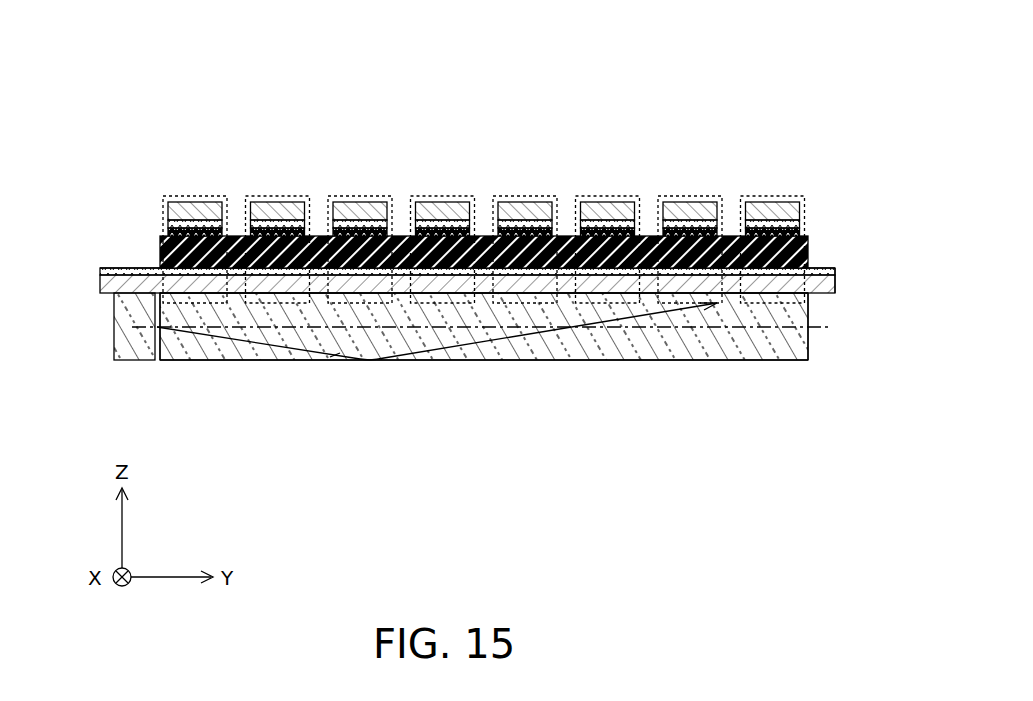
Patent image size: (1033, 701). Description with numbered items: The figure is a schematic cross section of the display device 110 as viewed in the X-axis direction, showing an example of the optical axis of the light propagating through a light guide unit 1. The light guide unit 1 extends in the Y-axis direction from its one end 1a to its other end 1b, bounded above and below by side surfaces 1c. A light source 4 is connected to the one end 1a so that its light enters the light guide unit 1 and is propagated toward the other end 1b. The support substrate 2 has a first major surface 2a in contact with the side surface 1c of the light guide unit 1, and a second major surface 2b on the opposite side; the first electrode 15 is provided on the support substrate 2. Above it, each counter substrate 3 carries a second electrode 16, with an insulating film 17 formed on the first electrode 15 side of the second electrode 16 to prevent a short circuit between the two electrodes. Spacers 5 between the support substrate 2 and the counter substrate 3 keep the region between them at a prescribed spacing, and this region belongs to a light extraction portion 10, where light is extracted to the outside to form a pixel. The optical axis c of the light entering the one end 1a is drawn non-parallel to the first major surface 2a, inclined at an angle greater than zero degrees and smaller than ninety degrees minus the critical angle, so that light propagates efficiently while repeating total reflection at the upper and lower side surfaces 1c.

The display device 110 is at (730, 100).
The light guide unit 1 is at (703, 337).
The one end 1a is at (161, 338).
The other end 1b is at (810, 345).
The side surface 1c is at (500, 292).
The support substrate 2 is at (100, 285).
The first major surface 2a is at (783, 288).
The second major surface 2b is at (780, 270).
The counter substrate 3 is at (186, 208).
The light source 4 is at (136, 345).
The spacer 5 is at (400, 242).
The light extraction portion 10 is at (193, 197).
The first electrode 15 is at (100, 270).
The second electrode 16 is at (168, 224).
The insulating film 17 is at (168, 232).
The optical axis c is at (217, 338).